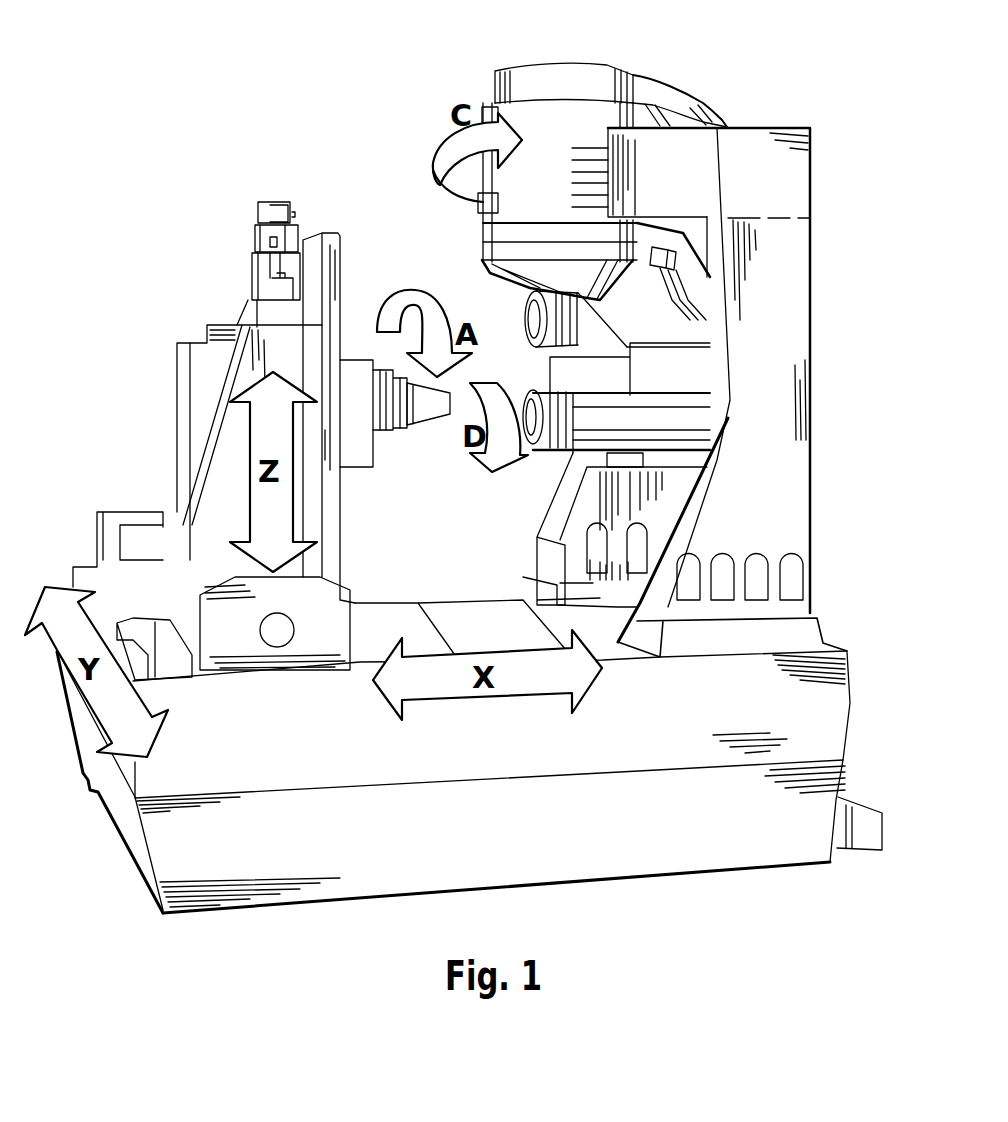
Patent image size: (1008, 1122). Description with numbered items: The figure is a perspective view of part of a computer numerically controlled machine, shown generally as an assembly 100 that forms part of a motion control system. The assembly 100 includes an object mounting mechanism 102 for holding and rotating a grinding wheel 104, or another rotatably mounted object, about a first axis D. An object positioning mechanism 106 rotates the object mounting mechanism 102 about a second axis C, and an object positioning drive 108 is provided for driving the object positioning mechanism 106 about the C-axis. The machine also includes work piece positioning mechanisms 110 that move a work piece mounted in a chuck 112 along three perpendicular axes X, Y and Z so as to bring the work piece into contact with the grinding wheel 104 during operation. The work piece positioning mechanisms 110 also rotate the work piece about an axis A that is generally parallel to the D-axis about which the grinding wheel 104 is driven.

The assembly 100 is at (243, 148).
The object mounting mechanism 102 is at (670, 443).
The grinding wheel 104 is at (545, 455).
The object positioning mechanism 106 is at (530, 258).
The object positioning drive 108 is at (568, 72).
The work piece positioning mechanisms 110 is at (200, 398).
The chuck 112 is at (430, 434).